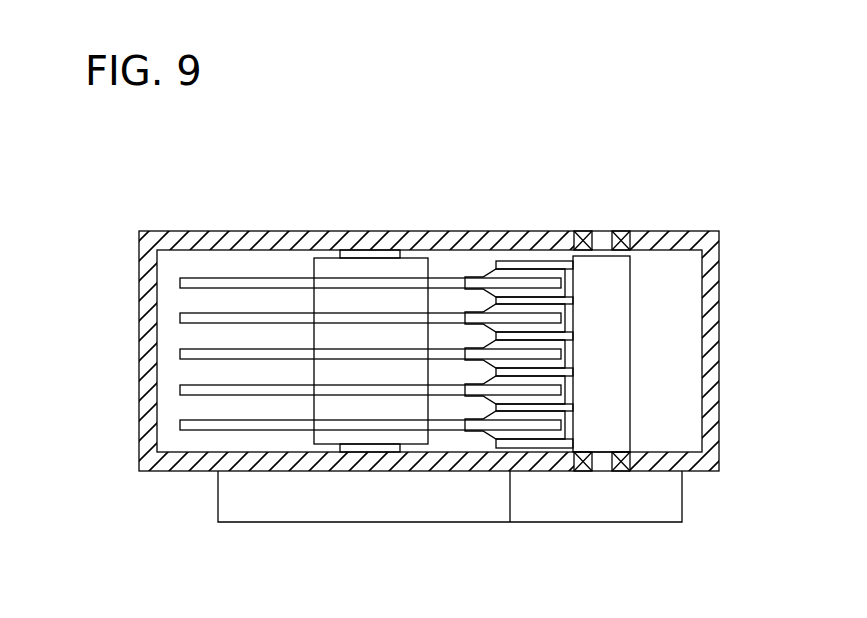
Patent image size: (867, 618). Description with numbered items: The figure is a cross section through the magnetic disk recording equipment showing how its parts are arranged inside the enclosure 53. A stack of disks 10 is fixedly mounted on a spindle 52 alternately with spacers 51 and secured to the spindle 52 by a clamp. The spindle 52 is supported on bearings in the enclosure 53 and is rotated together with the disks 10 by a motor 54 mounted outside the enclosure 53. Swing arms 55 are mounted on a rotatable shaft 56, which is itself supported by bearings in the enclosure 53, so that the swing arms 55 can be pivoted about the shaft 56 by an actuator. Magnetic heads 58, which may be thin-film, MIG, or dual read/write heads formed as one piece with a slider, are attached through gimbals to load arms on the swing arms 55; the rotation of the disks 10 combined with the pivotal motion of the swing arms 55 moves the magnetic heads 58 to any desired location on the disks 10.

The disks 10 is at (231, 284).
The spacers 51 is at (342, 305).
The spindle 52 is at (400, 255).
The enclosure 53 is at (463, 240).
The motor 54 is at (347, 500).
The swing arms 55 is at (545, 268).
The rotatable shaft 56 is at (602, 474).
The magnetic head 58 is at (468, 437).